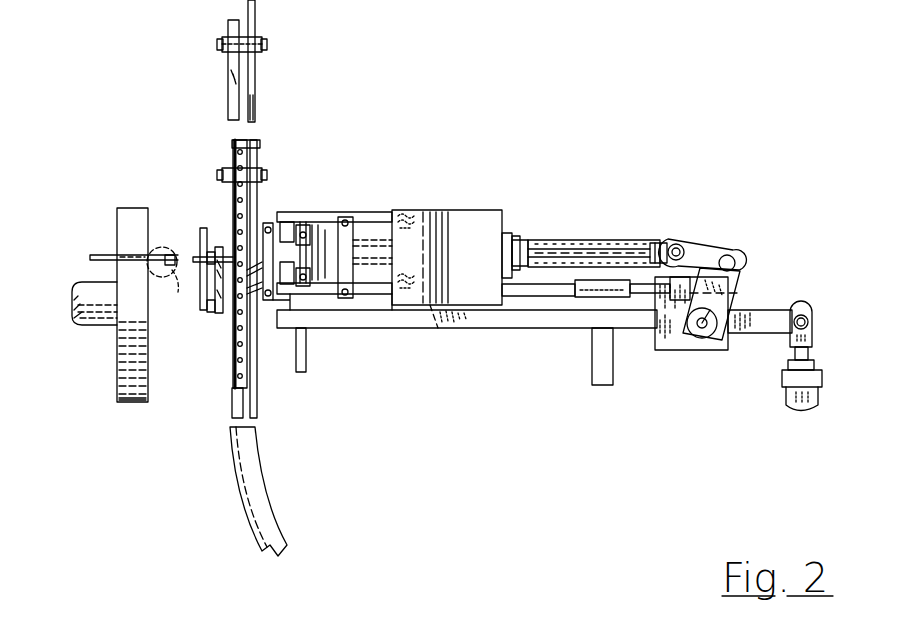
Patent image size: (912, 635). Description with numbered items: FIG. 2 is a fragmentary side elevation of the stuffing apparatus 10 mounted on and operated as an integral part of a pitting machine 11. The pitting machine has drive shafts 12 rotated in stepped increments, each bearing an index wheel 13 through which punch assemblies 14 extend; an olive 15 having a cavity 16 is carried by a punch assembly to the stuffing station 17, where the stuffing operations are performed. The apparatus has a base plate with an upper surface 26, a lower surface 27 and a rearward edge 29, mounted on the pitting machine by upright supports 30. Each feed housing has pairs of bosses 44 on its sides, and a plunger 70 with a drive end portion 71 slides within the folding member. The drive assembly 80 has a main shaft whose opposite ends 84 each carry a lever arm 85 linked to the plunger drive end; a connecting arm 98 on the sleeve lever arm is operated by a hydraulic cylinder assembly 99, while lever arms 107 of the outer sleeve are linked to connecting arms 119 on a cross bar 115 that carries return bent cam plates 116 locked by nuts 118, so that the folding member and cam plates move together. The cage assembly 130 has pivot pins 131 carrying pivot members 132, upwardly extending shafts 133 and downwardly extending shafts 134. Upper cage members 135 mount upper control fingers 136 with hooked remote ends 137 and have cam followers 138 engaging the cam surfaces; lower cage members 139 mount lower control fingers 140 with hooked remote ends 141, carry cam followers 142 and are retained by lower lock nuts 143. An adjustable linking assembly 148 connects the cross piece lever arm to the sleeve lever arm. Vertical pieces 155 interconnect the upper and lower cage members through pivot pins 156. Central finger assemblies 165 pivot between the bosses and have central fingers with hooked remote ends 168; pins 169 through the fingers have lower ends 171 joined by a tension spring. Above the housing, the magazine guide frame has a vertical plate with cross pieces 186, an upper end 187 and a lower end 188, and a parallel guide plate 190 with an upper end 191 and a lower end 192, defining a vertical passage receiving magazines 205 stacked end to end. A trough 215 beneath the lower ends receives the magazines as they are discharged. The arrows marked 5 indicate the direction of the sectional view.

The section line / direction arrow 5 is at (185, 252).
The stuffing apparatus 10 is at (390, 94).
The pitting machine 11 is at (50, 243).
The drive shafts 12 is at (95, 322).
The index wheel 13 is at (130, 207).
The punch assemblies 14 is at (97, 255).
The olive 15 is at (154, 247).
The cavity 16 is at (165, 286).
The stuffing station 17 is at (176, 293).
The upper surface 26 is at (530, 306).
The lower surface 27 is at (410, 329).
The rearward edge 29 is at (665, 318).
The upright supports 30 is at (602, 366).
The bosses 44 is at (326, 300).
The plunger assembly 70 is at (598, 250).
The drive end portion 71 is at (650, 248).
The drive assembly 80 is at (771, 255).
The opposite ends 84 is at (700, 331).
The lever arm 85 is at (740, 293).
The connecting arm 98 is at (757, 334).
The hydraulic cylinder assembly 99 is at (820, 396).
The lever arms 107 is at (712, 238).
The cross bar 115 is at (505, 232).
The return bent cam plates 116 is at (486, 246).
The nuts 118 is at (522, 240).
The connecting arms 119 is at (585, 240).
The cage assembly 130 is at (343, 183).
The pivot pin 131 is at (346, 224).
The pivot member 132 is at (318, 247).
The upwardly extending shafts 133 is at (320, 232).
The downwardly extending shafts 134 is at (341, 300).
The upper cage members 135 is at (420, 212).
The upper control fingers 136 is at (275, 208).
The remote ends 137 is at (235, 220).
The cam follower 138 is at (428, 214).
The lower cage members 139 is at (371, 321).
The lower control finger 140 is at (299, 321).
The hooked remote end 141 is at (250, 296).
The cam follower 142 is at (445, 330).
The lower lock nuts 143 is at (326, 301).
The adjustable linking assembly 148 is at (512, 300).
The vertical pieces 155 is at (281, 231).
The pivot pins 156 is at (285, 216).
The central finger assemblies 165 is at (245, 312).
The hooked remote end 168 is at (246, 272).
The pins 169 is at (322, 216).
The lower end 171 is at (305, 321).
The cross pieces 186 is at (255, 58).
The upper end 187 is at (256, 6).
The lower end 188 is at (256, 414).
The guide plate 190 is at (230, 104).
The upper end 191 is at (228, 22).
The lower end 192 is at (230, 414).
The magazines 205 is at (244, 372).
The trough 215 is at (263, 557).